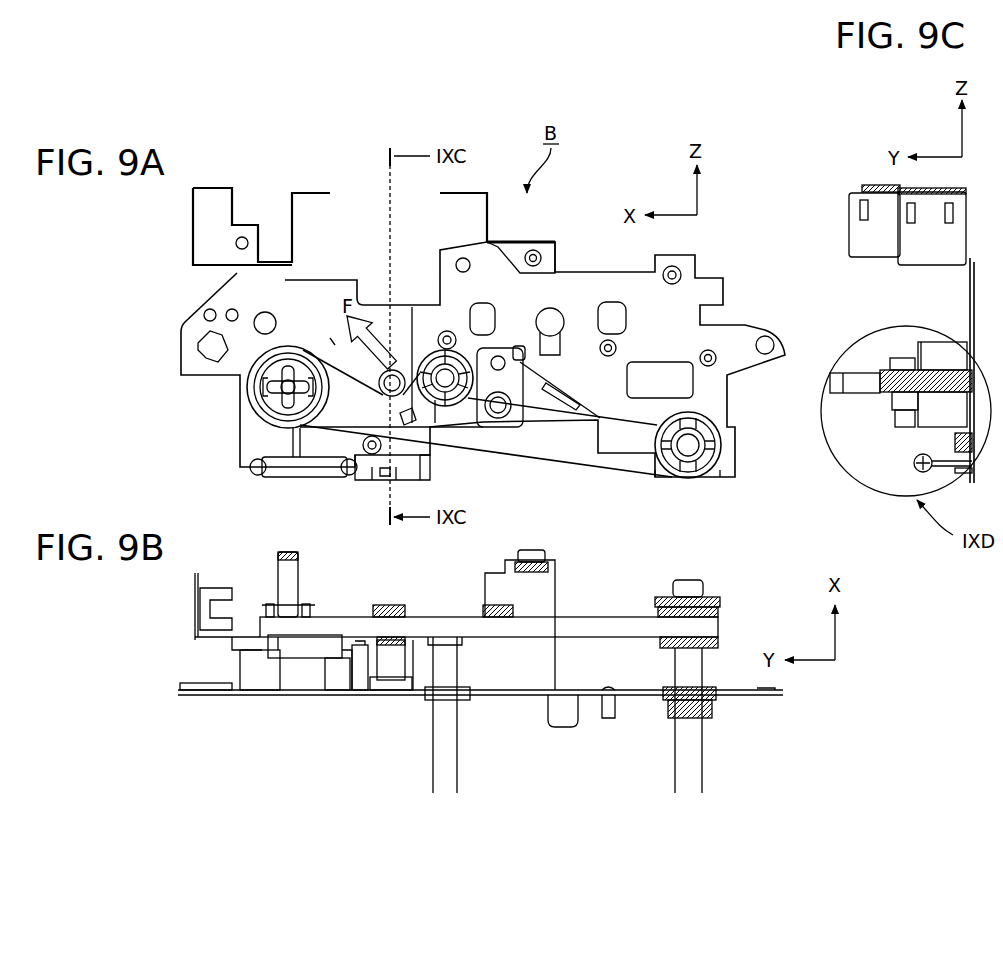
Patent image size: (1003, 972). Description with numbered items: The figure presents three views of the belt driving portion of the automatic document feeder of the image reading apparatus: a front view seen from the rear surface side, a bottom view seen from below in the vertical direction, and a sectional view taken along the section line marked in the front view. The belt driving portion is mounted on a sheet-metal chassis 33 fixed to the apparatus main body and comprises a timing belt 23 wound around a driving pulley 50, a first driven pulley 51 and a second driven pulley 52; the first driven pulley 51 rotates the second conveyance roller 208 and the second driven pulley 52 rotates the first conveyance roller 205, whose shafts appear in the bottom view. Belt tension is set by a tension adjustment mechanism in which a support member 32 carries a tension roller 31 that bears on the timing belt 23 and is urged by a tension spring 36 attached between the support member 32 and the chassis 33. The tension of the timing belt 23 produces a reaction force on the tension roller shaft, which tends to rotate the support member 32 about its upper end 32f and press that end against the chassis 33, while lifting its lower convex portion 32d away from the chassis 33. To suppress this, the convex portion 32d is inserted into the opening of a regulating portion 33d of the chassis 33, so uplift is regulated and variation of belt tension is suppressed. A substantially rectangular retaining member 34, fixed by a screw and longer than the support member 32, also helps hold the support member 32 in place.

In FIG. 9A, the timing belt 23 is at (545, 458).
In FIG. 9B, the timing belt 23 is at (535, 632).
In FIG. 9A, the tension roller 31 is at (392, 369).
In FIG. 9B, the support member 32 is at (360, 693).
In FIG. 9A, the convex portion 32d is at (388, 478).
In FIG. 9B, the convex portion 32d is at (390, 695).
In FIG. 9A, the upper end 32f is at (338, 340).
In FIG. 9A, the chassis 33 is at (592, 282).
In FIG. 9B, the chassis 33 is at (480, 650).
In FIG. 9C, the chassis 33 is at (968, 293).
In FIG. 9B, the regulating portion 33d is at (400, 678).
In FIG. 9A, the retaining member 34 is at (407, 447).
In FIG. 9B, the retaining member 34 is at (310, 695).
In FIG. 9A, the tension spring 36 is at (298, 470).
In FIG. 9B, the tension spring 36 is at (298, 648).
In FIG. 9A, the driving pulley 50 is at (255, 395).
In FIG. 9B, the driving pulley 50 is at (268, 610).
In FIG. 9A, the first driven pulley 51 is at (688, 478).
In FIG. 9B, the first driven pulley 51 is at (715, 597).
In FIG. 9C, the first driven pulley 51 is at (901, 407).
In FIG. 9A, the second driven pulley 52 is at (425, 352).
In FIG. 9B, the second driven pulley 52 is at (480, 605).
In FIG. 9B, the first conveyance roller 205 is at (682, 783).
In FIG. 9B, the second conveyance roller 208 is at (450, 783).